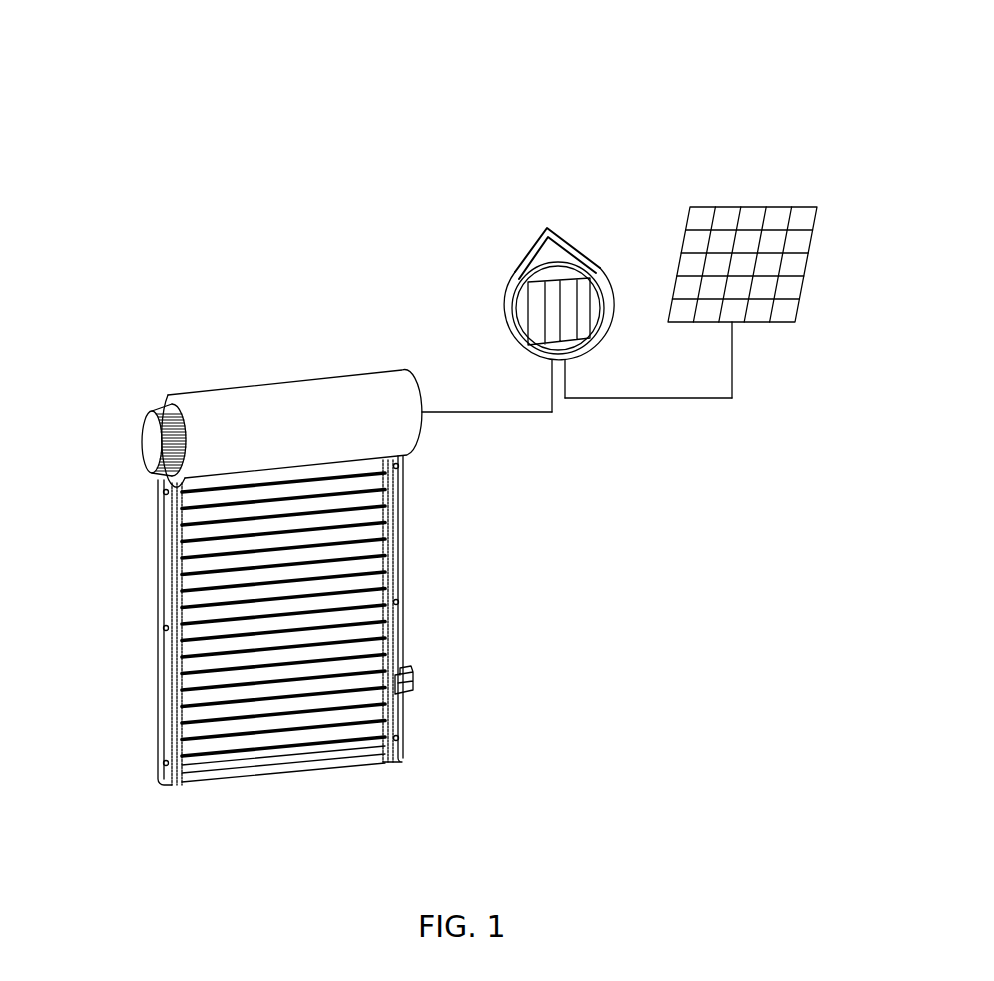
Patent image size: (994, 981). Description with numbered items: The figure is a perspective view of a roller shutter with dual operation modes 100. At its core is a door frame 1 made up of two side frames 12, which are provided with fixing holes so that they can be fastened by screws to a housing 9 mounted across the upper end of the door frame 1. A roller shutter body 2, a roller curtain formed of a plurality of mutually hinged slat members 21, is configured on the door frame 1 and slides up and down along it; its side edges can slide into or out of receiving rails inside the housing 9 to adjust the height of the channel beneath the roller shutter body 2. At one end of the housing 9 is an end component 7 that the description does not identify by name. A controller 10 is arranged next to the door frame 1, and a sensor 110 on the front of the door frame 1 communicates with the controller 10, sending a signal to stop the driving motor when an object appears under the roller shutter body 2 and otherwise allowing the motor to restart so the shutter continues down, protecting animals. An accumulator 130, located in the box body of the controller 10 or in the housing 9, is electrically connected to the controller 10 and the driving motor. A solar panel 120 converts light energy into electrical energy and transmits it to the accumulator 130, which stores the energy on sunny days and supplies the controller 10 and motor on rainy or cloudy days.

The roller shutter with dual operation modes 100 is at (205, 26).
The door frame 1 is at (145, 567).
The roller shutter body 2 is at (227, 788).
The slat members 21 is at (287, 733).
The end cap / knob 7 is at (153, 440).
The housing 9 is at (280, 403).
The side frames 12 is at (170, 655).
The sensor 110 is at (415, 690).
The controller 10 is at (512, 270).
The accumulator 130 is at (573, 310).
The solar panel 120 is at (752, 207).